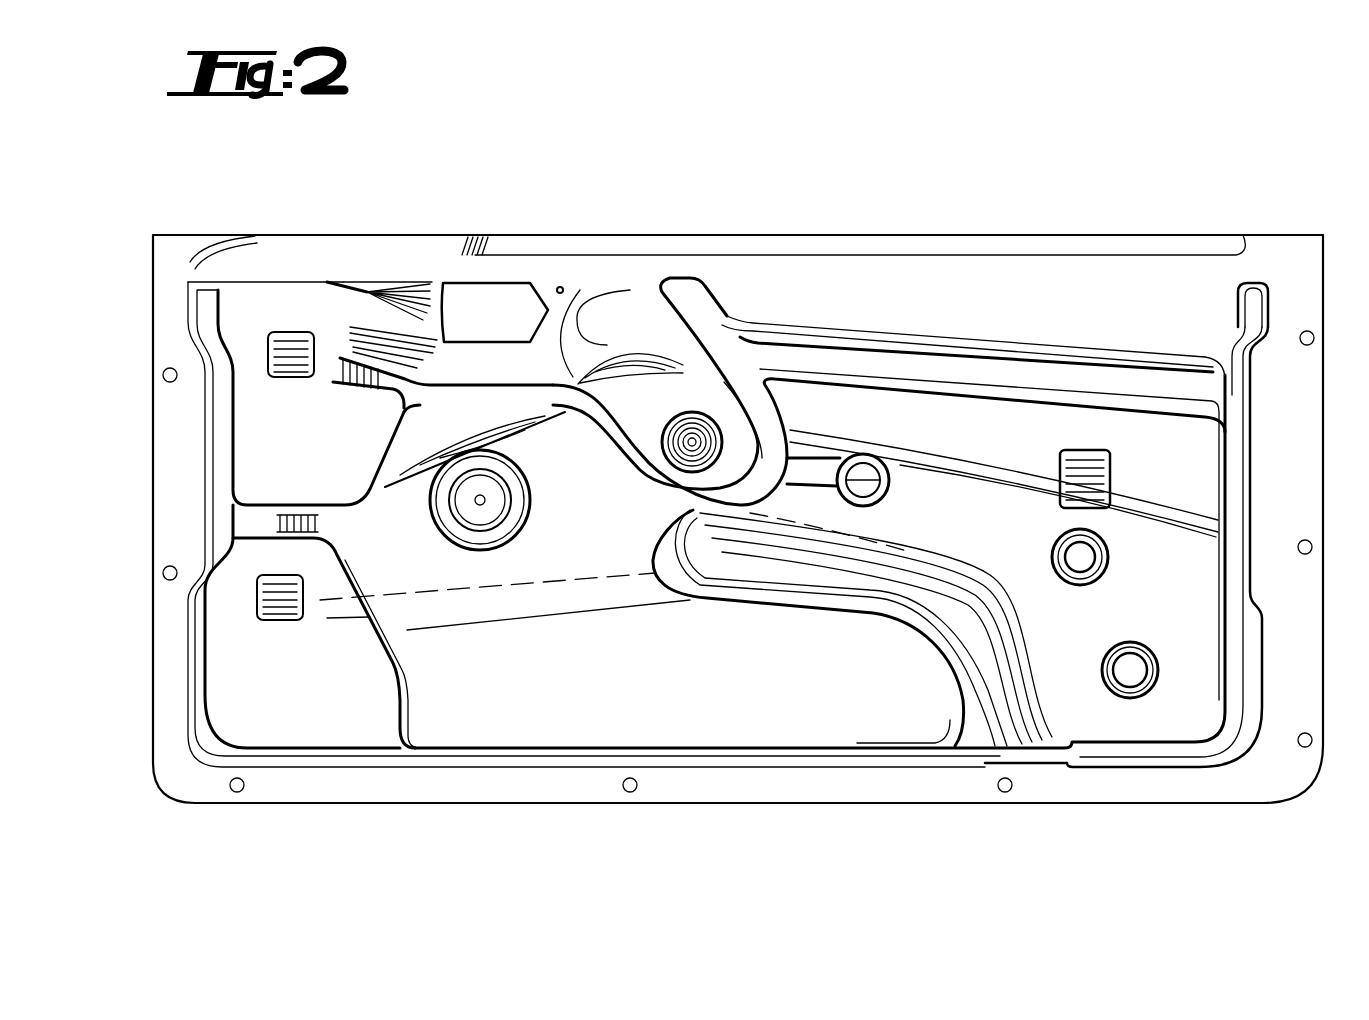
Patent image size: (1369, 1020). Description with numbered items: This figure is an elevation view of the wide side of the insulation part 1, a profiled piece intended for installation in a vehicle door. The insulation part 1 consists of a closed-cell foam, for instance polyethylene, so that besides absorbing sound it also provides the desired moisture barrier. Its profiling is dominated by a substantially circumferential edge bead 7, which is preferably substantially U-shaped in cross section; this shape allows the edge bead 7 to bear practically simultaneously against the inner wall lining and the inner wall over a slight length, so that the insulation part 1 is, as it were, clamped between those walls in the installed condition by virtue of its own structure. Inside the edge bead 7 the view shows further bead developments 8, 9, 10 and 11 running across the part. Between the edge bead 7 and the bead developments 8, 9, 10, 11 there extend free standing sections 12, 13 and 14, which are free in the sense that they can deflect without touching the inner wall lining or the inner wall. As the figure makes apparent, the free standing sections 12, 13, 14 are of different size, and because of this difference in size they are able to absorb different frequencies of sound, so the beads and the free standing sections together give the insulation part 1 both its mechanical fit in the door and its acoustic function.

The insulation part 1 is at (1253, 773).
The edge bead 7 is at (920, 367).
The bead development 8 is at (400, 666).
The bead development 9 is at (659, 287).
The bead development 10 is at (818, 600).
The bead development 11 is at (382, 469).
The free standing section 12 is at (565, 690).
The free standing section 13 is at (313, 710).
The free standing section 14 is at (1008, 465).